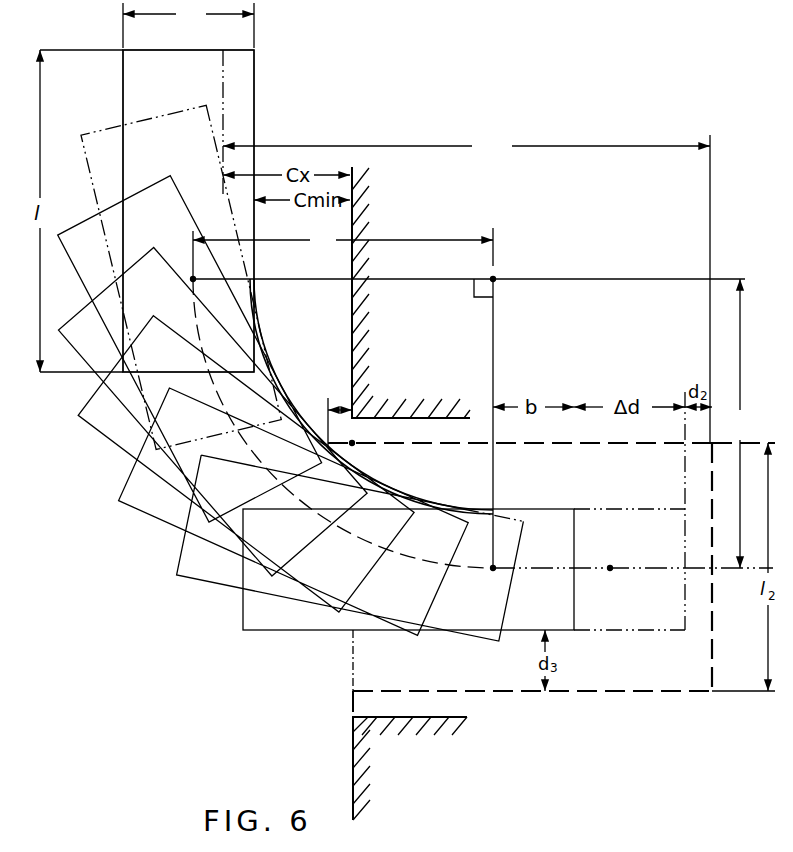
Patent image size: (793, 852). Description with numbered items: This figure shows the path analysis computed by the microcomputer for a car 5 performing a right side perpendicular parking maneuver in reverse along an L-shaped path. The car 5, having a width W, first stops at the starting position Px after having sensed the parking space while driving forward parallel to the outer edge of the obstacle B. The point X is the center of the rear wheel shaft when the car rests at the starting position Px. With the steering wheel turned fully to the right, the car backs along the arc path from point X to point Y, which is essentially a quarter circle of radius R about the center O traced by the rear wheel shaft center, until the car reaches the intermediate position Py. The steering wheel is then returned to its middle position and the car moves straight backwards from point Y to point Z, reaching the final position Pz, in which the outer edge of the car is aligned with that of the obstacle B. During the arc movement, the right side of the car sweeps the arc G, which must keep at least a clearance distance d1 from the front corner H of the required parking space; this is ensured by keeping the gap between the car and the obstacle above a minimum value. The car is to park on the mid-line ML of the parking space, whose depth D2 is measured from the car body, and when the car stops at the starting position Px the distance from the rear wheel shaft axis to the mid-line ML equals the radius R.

The car 5 is at (254, 80).
The starting position Px is at (123, 100).
The intermediate position Py is at (281, 631).
The final position Pz is at (464, 534).
The arc G is at (272, 378).
The obstacle B is at (410, 768).
The mid-line of the parking space ML is at (652, 568).
The car width W is at (188, 25).
The radius R is at (470, 398).
The depth of parking space D2 is at (467, 412).
The point X is at (188, 269).
The center O is at (488, 274).
The point Y is at (502, 557).
The point Z is at (606, 557).
The front corner of the parking space H is at (520, 433).
The clearance distance d1 is at (340, 416).